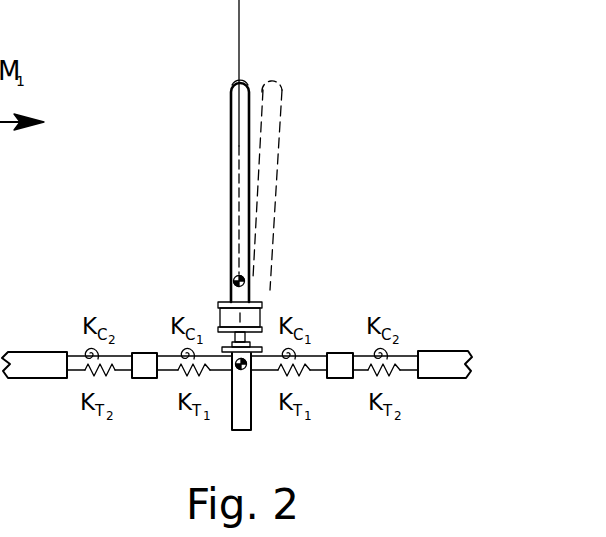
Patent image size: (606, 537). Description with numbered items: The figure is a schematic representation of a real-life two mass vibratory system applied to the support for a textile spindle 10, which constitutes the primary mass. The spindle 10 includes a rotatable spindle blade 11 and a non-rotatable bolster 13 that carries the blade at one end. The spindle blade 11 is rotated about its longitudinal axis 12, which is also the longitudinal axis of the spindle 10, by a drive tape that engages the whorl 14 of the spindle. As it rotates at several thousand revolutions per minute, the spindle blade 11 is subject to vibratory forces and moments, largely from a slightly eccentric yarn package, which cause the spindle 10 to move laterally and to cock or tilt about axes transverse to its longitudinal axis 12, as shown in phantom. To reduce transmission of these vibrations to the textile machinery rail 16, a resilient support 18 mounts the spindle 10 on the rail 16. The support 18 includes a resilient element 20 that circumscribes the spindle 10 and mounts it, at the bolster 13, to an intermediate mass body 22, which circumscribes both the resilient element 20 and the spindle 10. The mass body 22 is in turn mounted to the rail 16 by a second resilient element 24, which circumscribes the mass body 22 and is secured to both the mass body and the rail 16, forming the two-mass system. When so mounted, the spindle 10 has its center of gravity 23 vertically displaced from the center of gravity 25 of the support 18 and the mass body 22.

The textile spindle 10 is at (231, 184).
The spindle blade 11 is at (231, 102).
The longitudinal axis 12 is at (237, 4).
The bolster 13 is at (252, 416).
The whorl 14 is at (263, 313).
The textile machinery rail 16 is at (33, 356).
The resilient support 18 is at (149, 305).
The resilient element 20 is at (212, 352).
The mass body 22 is at (341, 352).
The center of gravity of the spindle 23 is at (236, 278).
The second resilient element 24 is at (84, 349).
The center of gravity of the support 25 is at (236, 367).